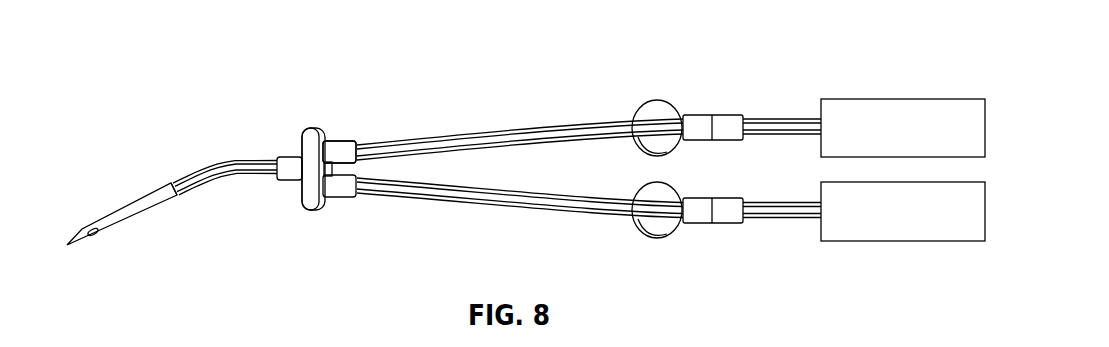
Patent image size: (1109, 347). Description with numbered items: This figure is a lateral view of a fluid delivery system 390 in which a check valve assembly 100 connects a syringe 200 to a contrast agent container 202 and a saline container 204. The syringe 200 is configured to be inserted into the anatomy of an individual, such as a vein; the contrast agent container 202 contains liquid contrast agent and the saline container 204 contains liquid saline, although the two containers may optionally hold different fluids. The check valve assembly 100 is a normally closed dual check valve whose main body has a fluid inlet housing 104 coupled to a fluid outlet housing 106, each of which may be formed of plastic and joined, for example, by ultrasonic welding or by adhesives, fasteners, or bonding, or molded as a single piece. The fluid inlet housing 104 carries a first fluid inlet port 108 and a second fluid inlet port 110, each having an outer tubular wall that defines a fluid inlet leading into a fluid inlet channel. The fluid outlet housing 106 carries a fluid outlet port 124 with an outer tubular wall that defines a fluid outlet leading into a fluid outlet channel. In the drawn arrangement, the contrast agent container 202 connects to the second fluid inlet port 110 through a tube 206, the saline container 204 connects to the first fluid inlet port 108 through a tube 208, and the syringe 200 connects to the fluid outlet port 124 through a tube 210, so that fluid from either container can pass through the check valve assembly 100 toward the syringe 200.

The fluid delivery system 390 is at (180, 70).
The check valve assembly 100 is at (301, 79).
The syringe 200 is at (137, 218).
The tube 210 is at (220, 162).
The fluid outlet housing 106 is at (287, 168).
The fluid outlet port 124 is at (298, 155).
The fluid inlet housing 104 is at (334, 150).
The second fluid inlet port 110 is at (352, 140).
The first fluid inlet port 108 is at (340, 190).
The tube 206 is at (503, 133).
The tube 208 is at (505, 203).
The contrast agent container 202 is at (900, 99).
The saline container 204 is at (900, 241).